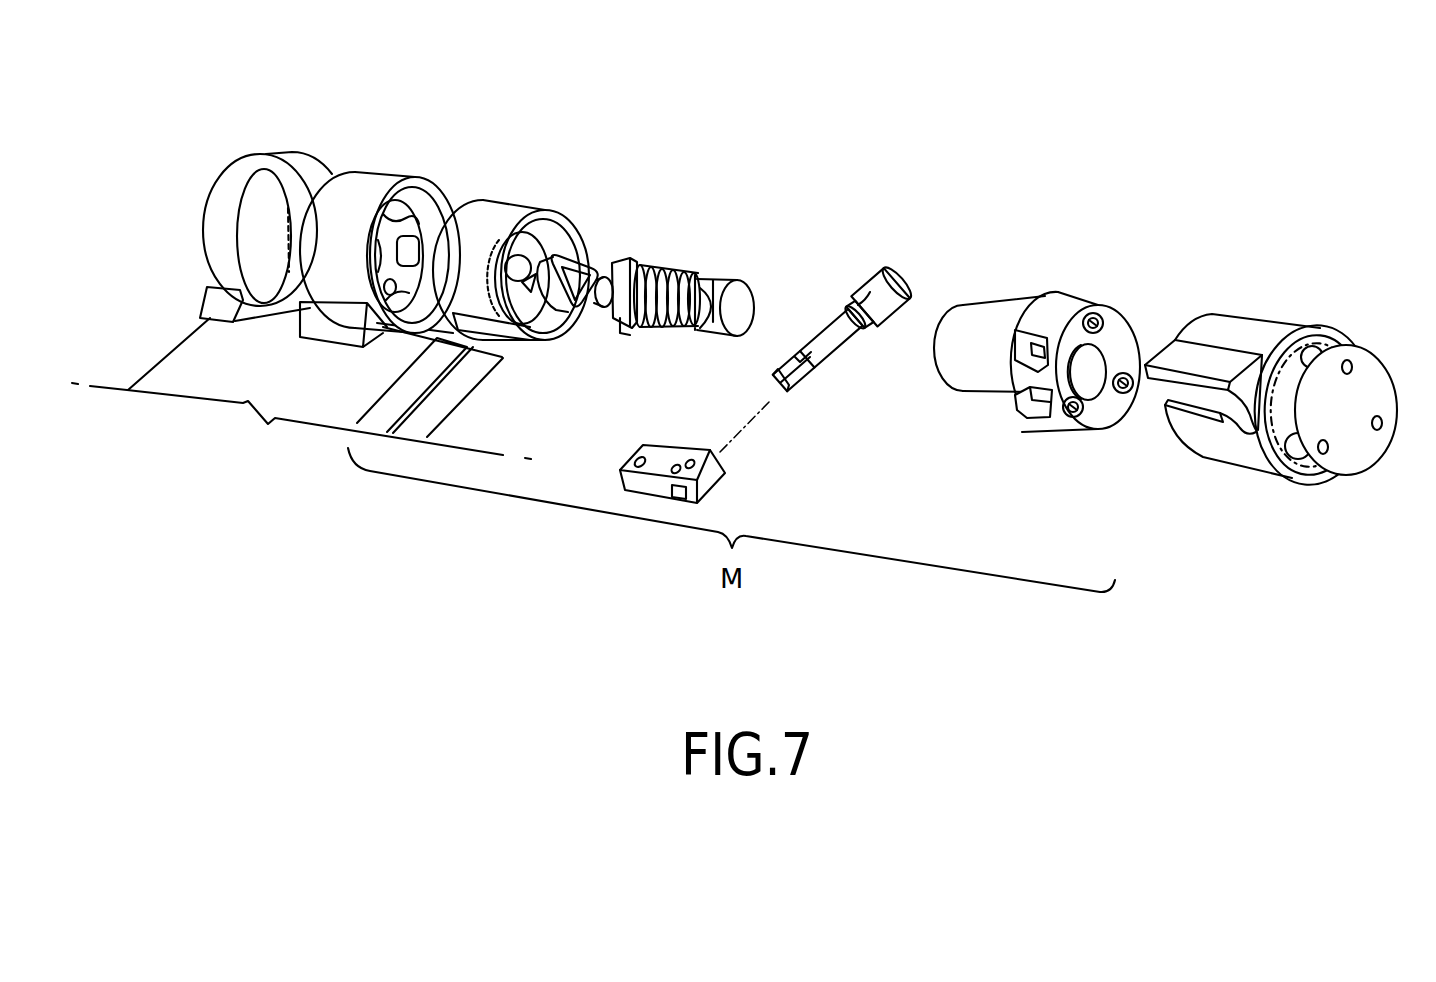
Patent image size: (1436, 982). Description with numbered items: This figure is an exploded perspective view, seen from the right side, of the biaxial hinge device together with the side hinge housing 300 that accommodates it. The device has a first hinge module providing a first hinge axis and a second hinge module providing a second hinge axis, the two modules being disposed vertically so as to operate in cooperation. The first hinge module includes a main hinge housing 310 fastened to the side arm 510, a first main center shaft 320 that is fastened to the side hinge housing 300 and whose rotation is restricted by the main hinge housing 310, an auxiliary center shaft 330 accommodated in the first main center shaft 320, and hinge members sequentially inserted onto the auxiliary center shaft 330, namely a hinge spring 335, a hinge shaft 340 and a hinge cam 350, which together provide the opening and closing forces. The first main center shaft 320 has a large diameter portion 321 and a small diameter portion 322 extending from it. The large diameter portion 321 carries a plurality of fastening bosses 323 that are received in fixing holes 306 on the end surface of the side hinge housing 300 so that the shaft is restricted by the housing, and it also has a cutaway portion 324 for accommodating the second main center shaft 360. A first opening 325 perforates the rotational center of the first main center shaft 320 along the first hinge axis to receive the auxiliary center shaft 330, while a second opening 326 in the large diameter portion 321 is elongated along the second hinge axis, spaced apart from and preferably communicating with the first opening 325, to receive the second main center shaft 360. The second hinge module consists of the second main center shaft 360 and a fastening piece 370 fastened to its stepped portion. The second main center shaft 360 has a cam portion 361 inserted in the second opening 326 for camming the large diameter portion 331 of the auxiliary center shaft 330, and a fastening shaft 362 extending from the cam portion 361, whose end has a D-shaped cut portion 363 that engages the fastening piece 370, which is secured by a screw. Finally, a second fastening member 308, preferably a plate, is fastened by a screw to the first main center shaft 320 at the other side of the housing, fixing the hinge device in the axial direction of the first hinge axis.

The side arm 510 is at (370, 184).
The main hinge housing 310 is at (492, 213).
The hinge cam 350 is at (588, 253).
The hinge shaft 340 is at (638, 262).
The hinge spring 335 is at (678, 277).
The auxiliary center shaft 330 is at (720, 299).
The large diameter portion 331 is at (706, 328).
The fastening piece 370 is at (632, 455).
The second main center shaft 360 is at (864, 298).
The cam portion 361 is at (868, 286).
The fastening shaft 362 is at (848, 344).
The D-shaped cut portion 363 is at (797, 358).
The first main center shaft 320 is at (1069, 360).
The large diameter portion 321 is at (1055, 304).
The small diameter portion 322 is at (993, 318).
The fastening bosses 323 is at (1103, 320).
The cutaway portion 324 is at (1042, 392).
The first opening 325 is at (1090, 380).
The second opening 326 is at (1030, 375).
The side hinge housing 300 is at (1287, 393).
The fixing holes 306 is at (1298, 458).
The second fastening member 308 is at (1370, 368).